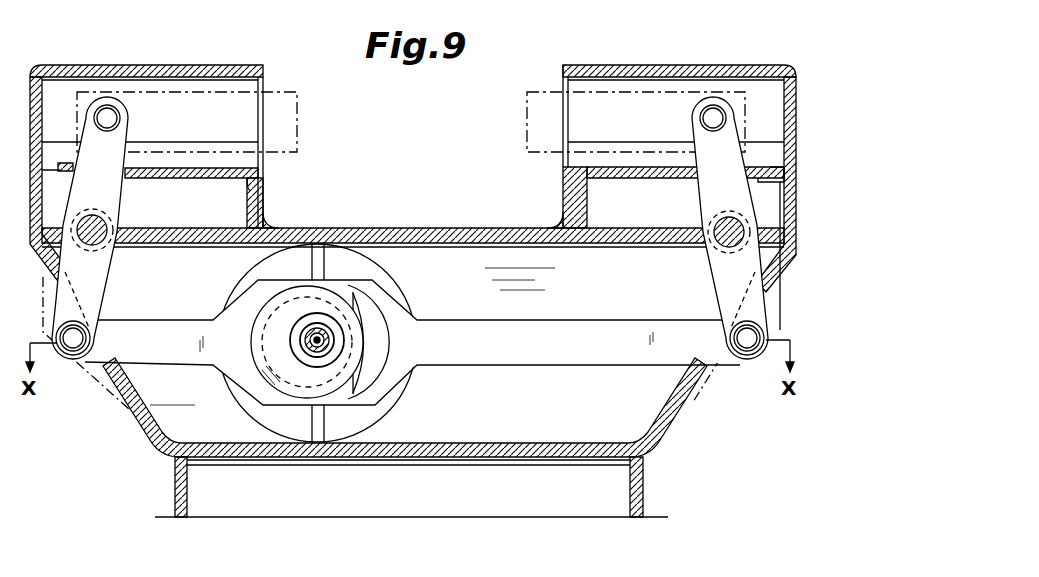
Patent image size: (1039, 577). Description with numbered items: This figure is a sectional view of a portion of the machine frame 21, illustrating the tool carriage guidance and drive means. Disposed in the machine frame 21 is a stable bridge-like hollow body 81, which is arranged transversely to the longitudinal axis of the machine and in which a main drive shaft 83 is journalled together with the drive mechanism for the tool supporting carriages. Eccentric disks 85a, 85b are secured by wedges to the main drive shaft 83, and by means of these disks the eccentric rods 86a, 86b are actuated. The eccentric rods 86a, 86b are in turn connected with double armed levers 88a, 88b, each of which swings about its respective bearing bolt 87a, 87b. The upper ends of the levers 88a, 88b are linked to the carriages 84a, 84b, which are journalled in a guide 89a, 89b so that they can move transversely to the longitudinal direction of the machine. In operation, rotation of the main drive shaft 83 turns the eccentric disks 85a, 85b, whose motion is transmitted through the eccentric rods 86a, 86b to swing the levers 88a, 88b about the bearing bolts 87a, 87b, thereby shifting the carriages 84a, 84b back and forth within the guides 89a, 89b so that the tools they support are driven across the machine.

The machine frame 21 is at (645, 489).
The bridge-like hollow body 81 is at (445, 228).
The main drive shaft 83 is at (322, 333).
The carriage 84a is at (297, 122).
The carriage 84b is at (527, 125).
The eccentric disk 85a is at (370, 364).
The eccentric disk 85b is at (262, 352).
The eccentric rod 86a is at (186, 354).
The eccentric rod 86b is at (542, 357).
The bearing bolt 87a is at (92, 209).
The bearing bolt 87b is at (733, 211).
The double armed lever 88a is at (95, 275).
The double armed lever 88b is at (728, 278).
The guide 89a is at (260, 191).
The guide 89b is at (570, 191).